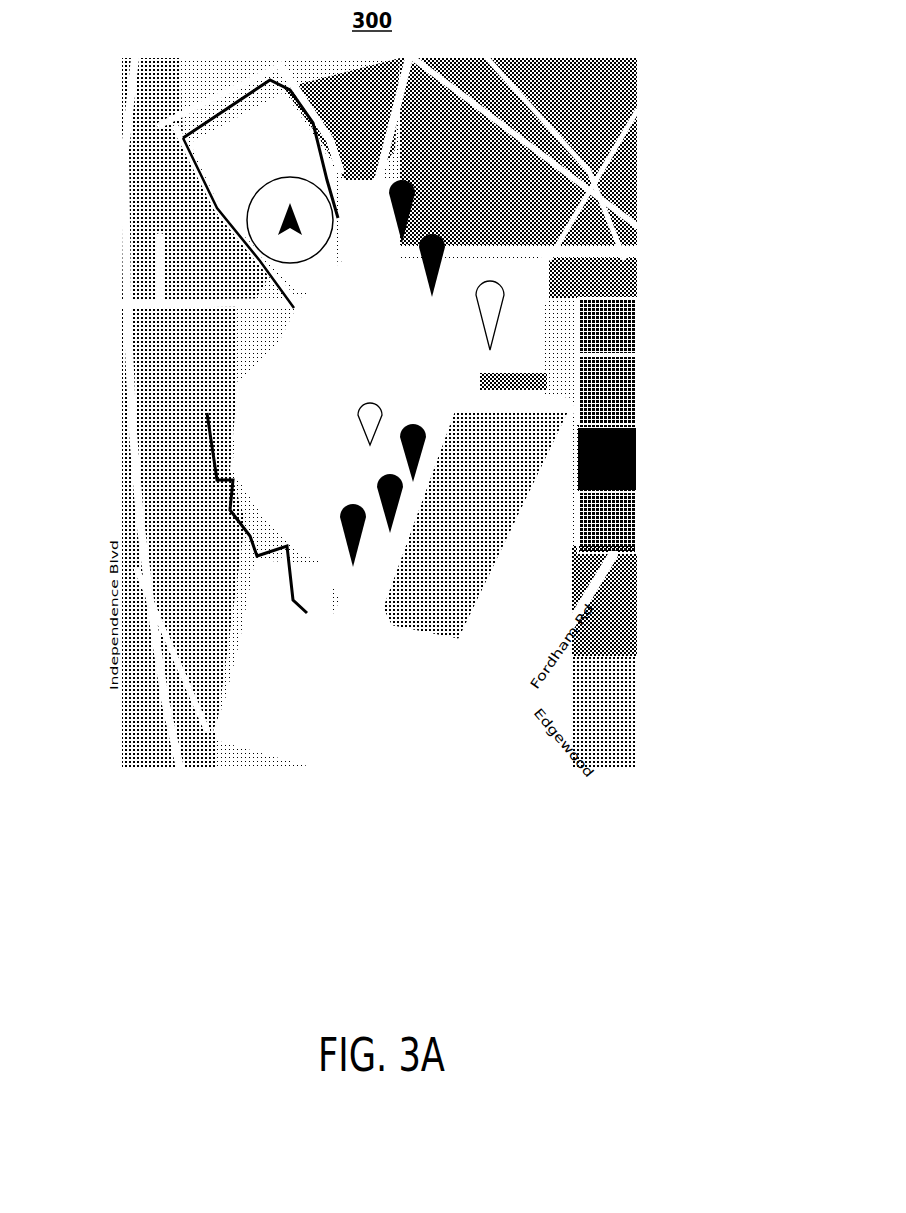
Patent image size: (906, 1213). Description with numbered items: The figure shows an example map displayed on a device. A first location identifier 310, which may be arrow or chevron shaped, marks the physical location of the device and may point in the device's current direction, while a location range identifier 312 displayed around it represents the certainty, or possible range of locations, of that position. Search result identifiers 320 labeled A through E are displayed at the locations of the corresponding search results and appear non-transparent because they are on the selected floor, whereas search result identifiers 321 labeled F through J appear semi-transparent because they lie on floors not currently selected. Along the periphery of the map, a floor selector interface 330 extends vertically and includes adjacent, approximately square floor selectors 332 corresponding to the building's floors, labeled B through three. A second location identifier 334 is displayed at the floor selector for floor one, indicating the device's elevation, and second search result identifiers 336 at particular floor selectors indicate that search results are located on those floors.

The first location identifier 310 is at (273, 222).
The location range identifier 312 is at (287, 263).
The search result identifiers 320 is at (460, 251).
The search result identifiers 321 is at (300, 590).
The floor selector interface 330 is at (691, 474).
The floor selectors 332 is at (633, 342).
The second location identifier 334 is at (653, 459).
The second search result identifiers 336 is at (636, 413).